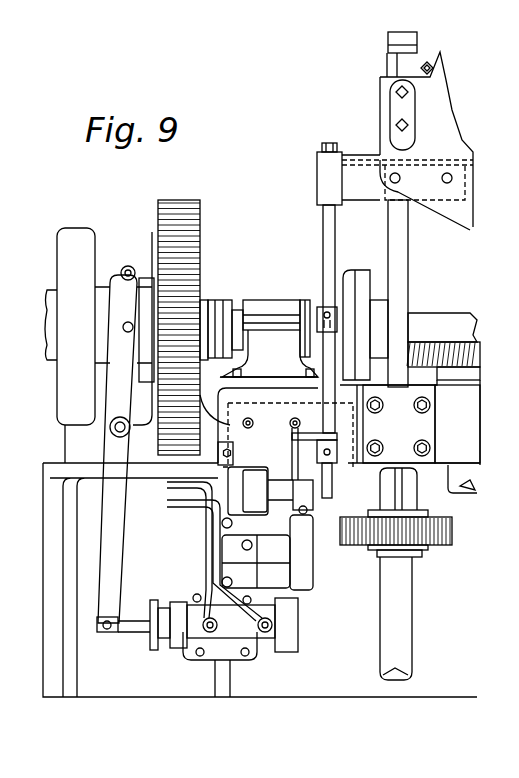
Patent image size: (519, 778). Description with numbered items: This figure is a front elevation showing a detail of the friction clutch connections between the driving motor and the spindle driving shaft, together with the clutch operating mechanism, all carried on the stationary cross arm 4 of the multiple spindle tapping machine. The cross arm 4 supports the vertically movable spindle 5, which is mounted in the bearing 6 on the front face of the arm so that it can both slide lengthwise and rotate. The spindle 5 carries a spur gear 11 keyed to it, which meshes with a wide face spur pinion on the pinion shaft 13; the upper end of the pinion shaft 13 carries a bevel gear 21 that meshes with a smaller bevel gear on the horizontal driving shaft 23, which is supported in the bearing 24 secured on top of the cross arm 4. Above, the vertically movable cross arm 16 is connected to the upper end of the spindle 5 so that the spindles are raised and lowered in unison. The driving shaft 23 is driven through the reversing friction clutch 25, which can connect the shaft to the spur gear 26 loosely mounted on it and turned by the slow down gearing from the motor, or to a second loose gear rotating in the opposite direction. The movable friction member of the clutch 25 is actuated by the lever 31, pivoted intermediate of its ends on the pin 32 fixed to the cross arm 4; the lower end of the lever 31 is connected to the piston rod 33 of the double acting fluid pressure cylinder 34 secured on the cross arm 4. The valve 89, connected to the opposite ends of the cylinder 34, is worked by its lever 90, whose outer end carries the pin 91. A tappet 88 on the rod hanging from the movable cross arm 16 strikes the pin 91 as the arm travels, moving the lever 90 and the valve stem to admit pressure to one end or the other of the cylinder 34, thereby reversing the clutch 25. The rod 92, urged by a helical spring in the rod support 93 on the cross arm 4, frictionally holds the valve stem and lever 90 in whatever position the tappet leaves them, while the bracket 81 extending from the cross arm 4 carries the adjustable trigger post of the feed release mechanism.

The cross arm 4 is at (261, 464).
The spindle 5 is at (398, 574).
The bearing 6 is at (421, 424).
The spur gear 11 is at (336, 548).
The pinion shaft 13 is at (465, 483).
The cross arm 16 is at (473, 212).
The bevel gear 21 is at (480, 360).
The driving shaft 23 is at (410, 325).
The bearing 24 is at (259, 362).
The reversing friction clutch 25 is at (98, 257).
The spur gear 26 is at (200, 250).
The lever 31 is at (113, 517).
The pin 32 is at (117, 431).
The piston rod 33 is at (128, 625).
The fluid pressure cylinder 34 is at (224, 645).
The bracket 81 is at (319, 307).
The tappet 88 is at (336, 466).
The valve 89 is at (240, 531).
The lever 90 is at (292, 452).
The pin 91 is at (296, 436).
The rod 92 is at (307, 507).
The rod support 93 is at (310, 597).